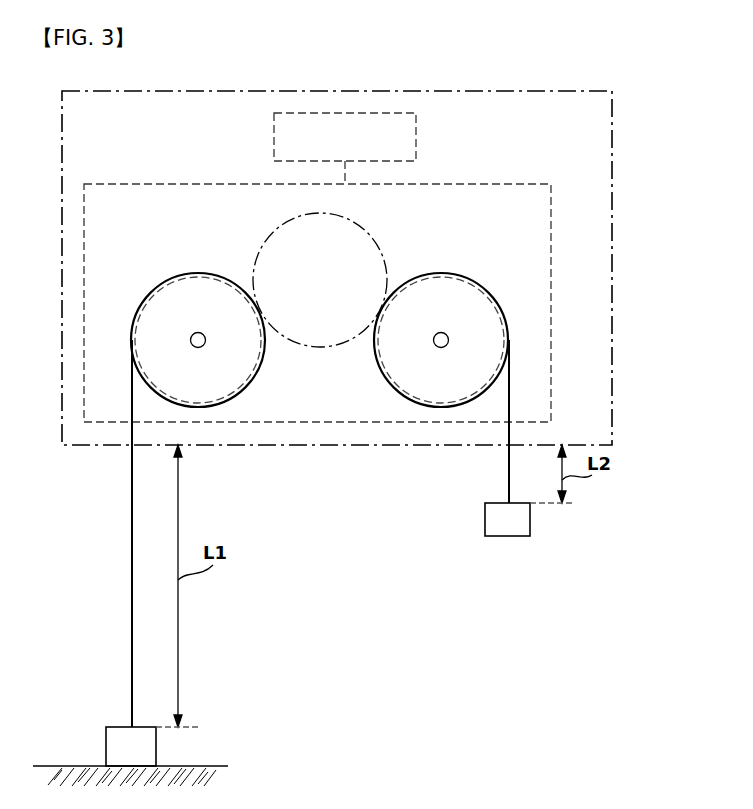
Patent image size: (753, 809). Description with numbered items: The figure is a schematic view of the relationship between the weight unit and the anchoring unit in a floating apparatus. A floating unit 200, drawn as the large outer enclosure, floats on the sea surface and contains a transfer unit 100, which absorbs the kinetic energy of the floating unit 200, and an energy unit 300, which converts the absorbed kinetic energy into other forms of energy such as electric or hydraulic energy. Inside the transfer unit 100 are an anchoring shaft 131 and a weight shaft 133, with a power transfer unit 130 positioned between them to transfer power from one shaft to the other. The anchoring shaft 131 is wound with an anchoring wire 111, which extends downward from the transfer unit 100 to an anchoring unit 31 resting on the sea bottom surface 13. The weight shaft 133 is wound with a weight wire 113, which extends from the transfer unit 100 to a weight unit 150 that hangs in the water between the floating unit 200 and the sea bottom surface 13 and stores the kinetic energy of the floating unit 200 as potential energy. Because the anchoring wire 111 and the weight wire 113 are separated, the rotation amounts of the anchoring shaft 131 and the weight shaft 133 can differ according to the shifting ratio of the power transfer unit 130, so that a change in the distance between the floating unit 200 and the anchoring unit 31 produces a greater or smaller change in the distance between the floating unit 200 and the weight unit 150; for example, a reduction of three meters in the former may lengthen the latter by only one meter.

The floating unit 200 is at (612, 118).
The transfer unit 100 is at (500, 184).
The energy unit 300 is at (416, 138).
The power transfer unit 130 is at (367, 230).
The anchoring shaft 131 is at (145, 300).
The weight shaft 133 is at (528, 288).
The anchoring wire 111 is at (132, 525).
The weight wire 113 is at (509, 400).
The weight unit 150 is at (516, 536).
The anchoring unit 31 is at (106, 732).
The sea bottom surface 13 is at (193, 766).